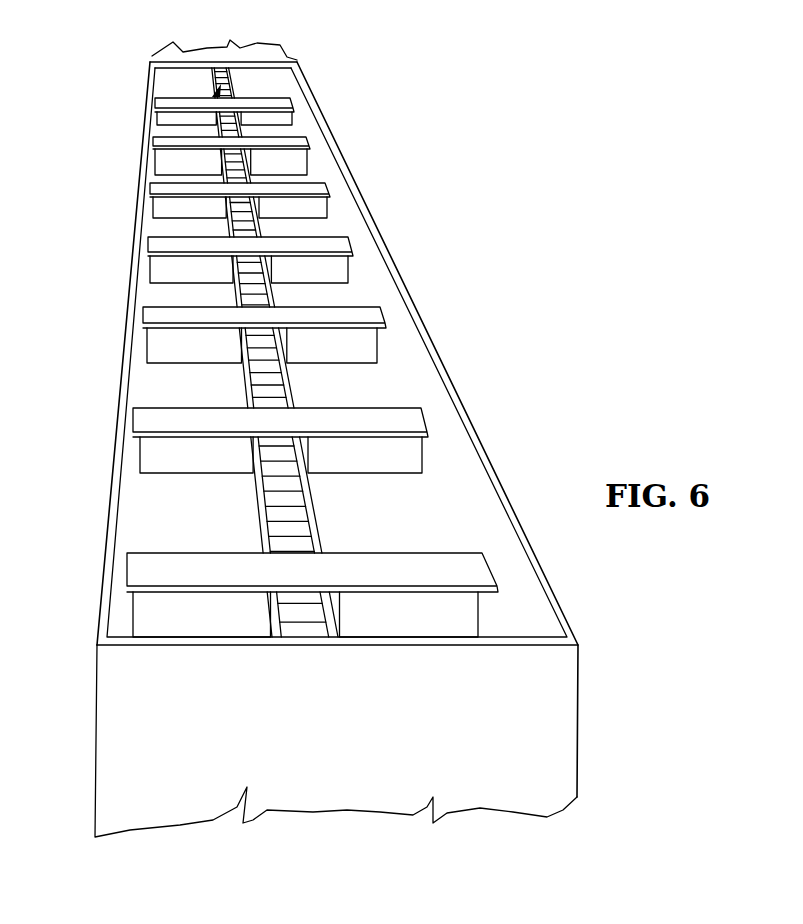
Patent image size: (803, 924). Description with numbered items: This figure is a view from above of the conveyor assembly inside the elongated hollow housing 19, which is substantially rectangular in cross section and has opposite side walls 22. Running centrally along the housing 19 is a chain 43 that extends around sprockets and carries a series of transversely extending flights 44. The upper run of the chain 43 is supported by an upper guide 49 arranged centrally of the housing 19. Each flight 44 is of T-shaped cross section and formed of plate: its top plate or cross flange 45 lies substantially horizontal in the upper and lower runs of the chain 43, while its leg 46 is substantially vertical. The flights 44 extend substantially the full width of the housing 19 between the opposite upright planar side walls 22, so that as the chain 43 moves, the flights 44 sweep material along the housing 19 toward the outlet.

The elongated hollow housing 19 is at (320, 438).
The side walls 22 is at (407, 278).
The chain 43 is at (198, 352).
The flights 44 is at (338, 157).
The top plate or cross flange 45 is at (147, 427).
The leg 46 is at (150, 460).
The upper guide 49 is at (282, 545).